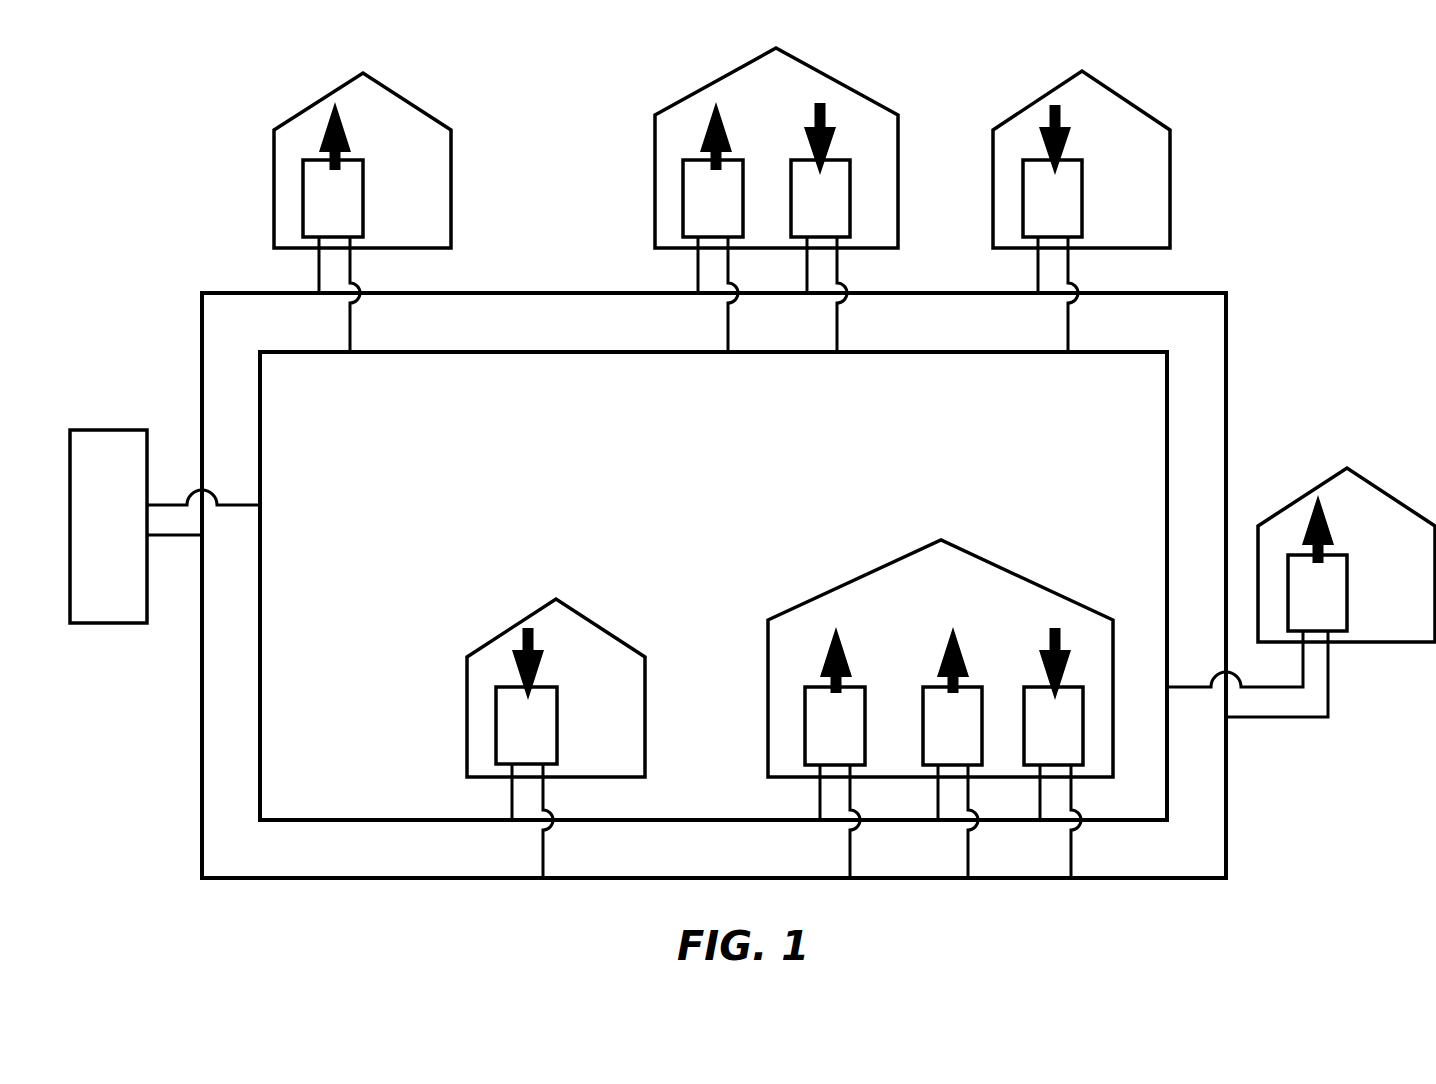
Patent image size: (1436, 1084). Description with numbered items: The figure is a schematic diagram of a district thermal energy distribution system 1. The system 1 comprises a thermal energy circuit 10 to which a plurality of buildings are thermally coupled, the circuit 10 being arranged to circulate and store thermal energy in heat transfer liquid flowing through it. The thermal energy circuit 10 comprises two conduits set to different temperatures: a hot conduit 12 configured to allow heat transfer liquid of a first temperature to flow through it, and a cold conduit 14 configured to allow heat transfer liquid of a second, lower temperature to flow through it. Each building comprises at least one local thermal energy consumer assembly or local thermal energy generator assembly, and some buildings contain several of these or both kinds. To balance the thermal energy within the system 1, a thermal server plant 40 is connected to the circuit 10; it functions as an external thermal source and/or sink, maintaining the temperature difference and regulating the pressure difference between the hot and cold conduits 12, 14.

The district thermal energy distribution system 1 is at (199, 142).
The thermal energy circuit 10 is at (281, 653).
The hot conduit 12 is at (220, 293).
The cold conduit 14 is at (263, 553).
The thermal server plant 40 is at (113, 447).